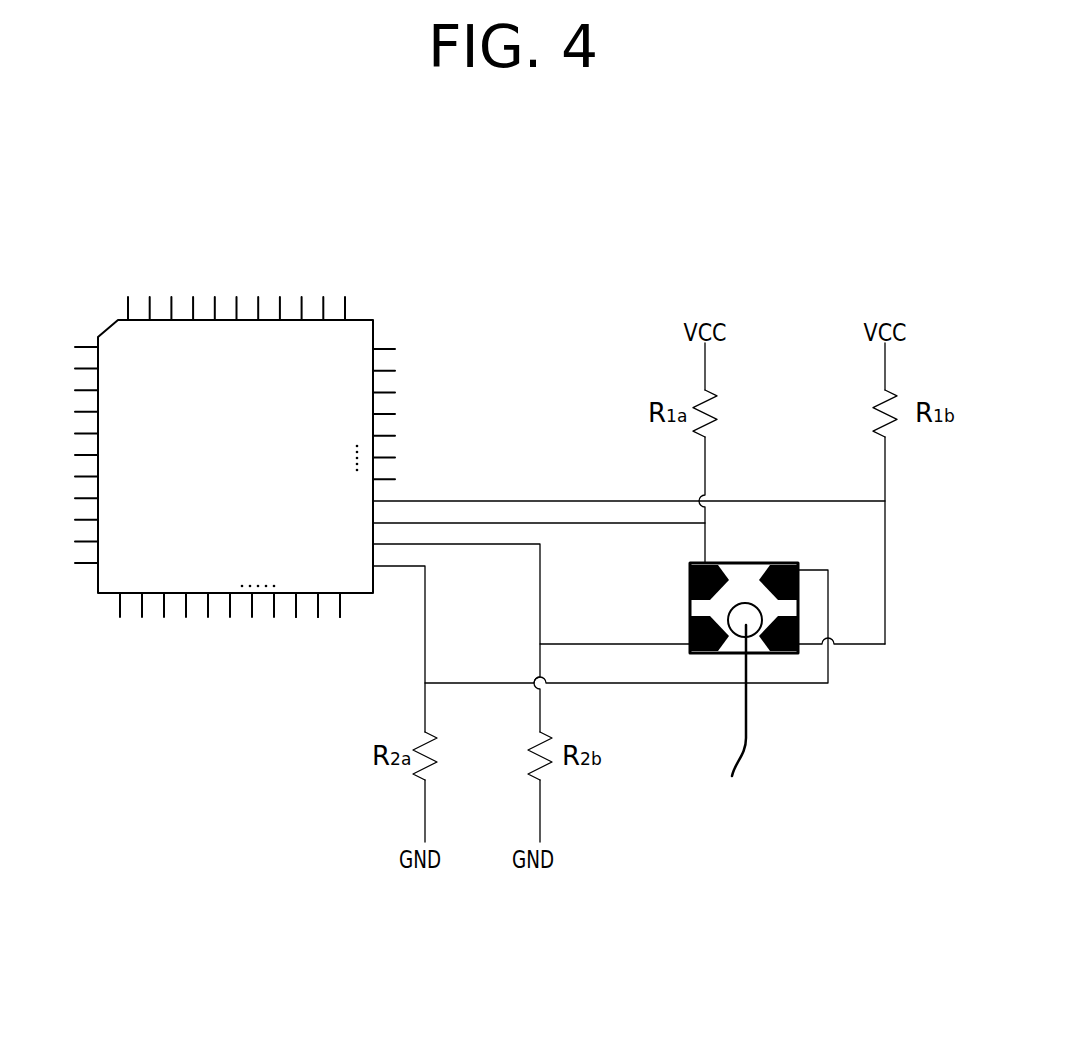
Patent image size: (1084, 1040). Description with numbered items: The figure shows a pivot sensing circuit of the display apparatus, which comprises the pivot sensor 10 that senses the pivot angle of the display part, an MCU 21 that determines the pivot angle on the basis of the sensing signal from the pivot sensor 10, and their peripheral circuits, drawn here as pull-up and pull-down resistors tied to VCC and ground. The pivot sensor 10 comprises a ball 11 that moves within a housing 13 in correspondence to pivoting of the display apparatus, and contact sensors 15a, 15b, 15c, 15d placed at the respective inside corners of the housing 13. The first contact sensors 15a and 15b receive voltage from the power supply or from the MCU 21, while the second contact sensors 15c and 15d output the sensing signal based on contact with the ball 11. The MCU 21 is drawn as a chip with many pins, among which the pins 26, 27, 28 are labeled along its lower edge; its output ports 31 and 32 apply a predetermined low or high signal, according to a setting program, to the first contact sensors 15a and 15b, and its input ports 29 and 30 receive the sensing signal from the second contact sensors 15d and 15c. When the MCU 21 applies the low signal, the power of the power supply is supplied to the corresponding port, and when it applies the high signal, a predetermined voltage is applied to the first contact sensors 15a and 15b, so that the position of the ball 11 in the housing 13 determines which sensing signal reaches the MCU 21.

The MCU (microcontroller unit) 21 is at (350, 340).
The pivot sensor 10 is at (705, 622).
The ball 11 is at (727, 720).
The housing 13 is at (740, 562).
The first contact sensor 15a is at (690, 578).
The first contact sensor 15b is at (793, 654).
The second contact sensor 15c is at (704, 654).
The second contact sensor 15d is at (790, 562).
The MCU pin 26 is at (299, 597).
The MCU pin 27 is at (319, 597).
The MCU pin 28 is at (339, 597).
The input port 29 is at (385, 644).
The input port 30 is at (518, 589).
The output port 31 is at (525, 523).
The output port 32 is at (615, 501).